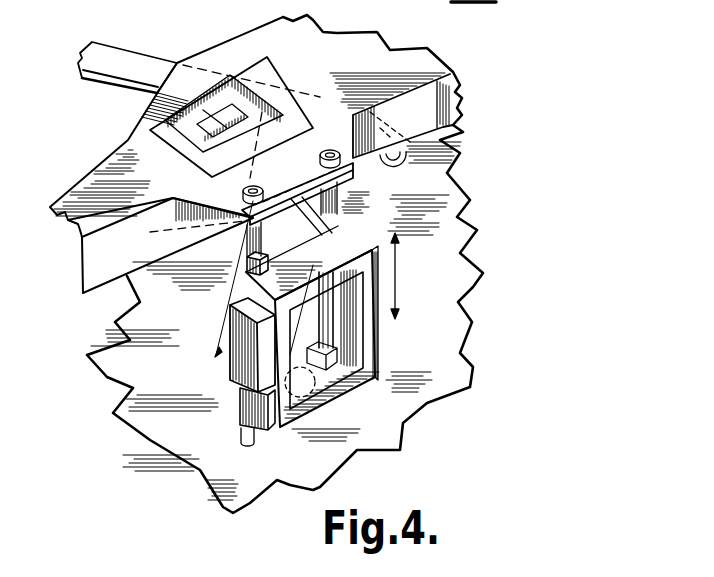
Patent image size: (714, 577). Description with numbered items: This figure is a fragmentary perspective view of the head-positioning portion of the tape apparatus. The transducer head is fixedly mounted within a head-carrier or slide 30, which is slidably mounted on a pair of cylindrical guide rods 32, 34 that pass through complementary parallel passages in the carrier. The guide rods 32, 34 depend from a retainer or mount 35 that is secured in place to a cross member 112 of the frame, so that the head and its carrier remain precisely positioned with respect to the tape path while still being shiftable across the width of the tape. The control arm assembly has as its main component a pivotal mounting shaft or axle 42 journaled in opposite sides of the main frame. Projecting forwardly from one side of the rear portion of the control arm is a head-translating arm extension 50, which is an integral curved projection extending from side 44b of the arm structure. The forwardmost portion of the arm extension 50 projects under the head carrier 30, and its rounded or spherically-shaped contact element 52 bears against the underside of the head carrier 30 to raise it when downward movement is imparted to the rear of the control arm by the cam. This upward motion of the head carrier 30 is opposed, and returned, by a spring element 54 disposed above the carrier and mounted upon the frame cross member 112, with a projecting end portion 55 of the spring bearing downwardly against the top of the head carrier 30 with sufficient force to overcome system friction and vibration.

The side of arm structure 44b is at (128, 57).
The spring element 54 is at (160, 105).
The cross member 112 is at (335, 90).
The retainer or mount 35 is at (165, 164).
The pivotal mounting shaft or axle 42 is at (172, 230).
The projecting end portion of the spring 55 is at (311, 226).
The head-translating arm extension 50 is at (224, 289).
The cylindrical guide rod 34 is at (328, 338).
The head-carrier or slide 30 is at (241, 348).
The contact element 52 is at (337, 397).
The cylindrical guide rod 32 is at (240, 437).